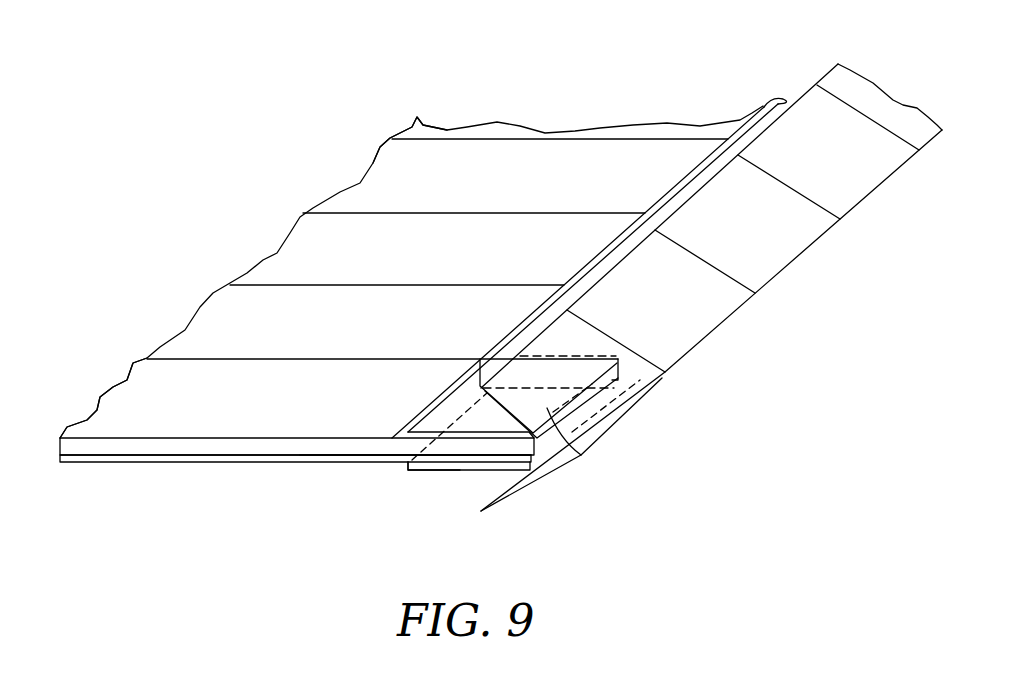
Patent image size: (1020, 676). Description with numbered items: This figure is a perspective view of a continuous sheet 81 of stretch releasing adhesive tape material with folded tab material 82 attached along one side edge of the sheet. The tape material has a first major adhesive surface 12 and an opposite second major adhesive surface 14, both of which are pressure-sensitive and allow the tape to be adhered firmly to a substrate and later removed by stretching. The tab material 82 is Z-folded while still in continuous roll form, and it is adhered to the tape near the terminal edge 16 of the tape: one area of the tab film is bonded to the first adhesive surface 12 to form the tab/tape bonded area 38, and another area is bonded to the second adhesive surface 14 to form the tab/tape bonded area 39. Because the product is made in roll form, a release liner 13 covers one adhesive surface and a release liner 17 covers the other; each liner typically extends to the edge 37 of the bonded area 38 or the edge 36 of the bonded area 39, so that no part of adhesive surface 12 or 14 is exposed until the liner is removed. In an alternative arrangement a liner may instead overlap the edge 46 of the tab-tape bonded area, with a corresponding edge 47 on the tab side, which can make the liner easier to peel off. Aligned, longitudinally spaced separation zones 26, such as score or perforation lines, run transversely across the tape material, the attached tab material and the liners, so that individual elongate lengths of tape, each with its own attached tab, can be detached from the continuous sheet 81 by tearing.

The first major adhesive surface 12 is at (183, 450).
The release liner 13 is at (260, 462).
The second major adhesive surface 14 is at (92, 408).
The terminal edge 16 is at (587, 401).
The release liner 17 is at (372, 168).
The separation zones 26 is at (303, 215).
The edge of tab-tape bonded area 36 is at (407, 432).
The edge of tab-tape bonded area 37 is at (407, 472).
The tab/tape bonded area 38 is at (482, 472).
The tab/tape bonded area 39 is at (488, 370).
The edge of tab-tape bonded area 46 is at (365, 450).
The upright flange of connector 47 is at (444, 392).
The continuous sheet 81 is at (530, 117).
The folded tab material 82 is at (905, 93).